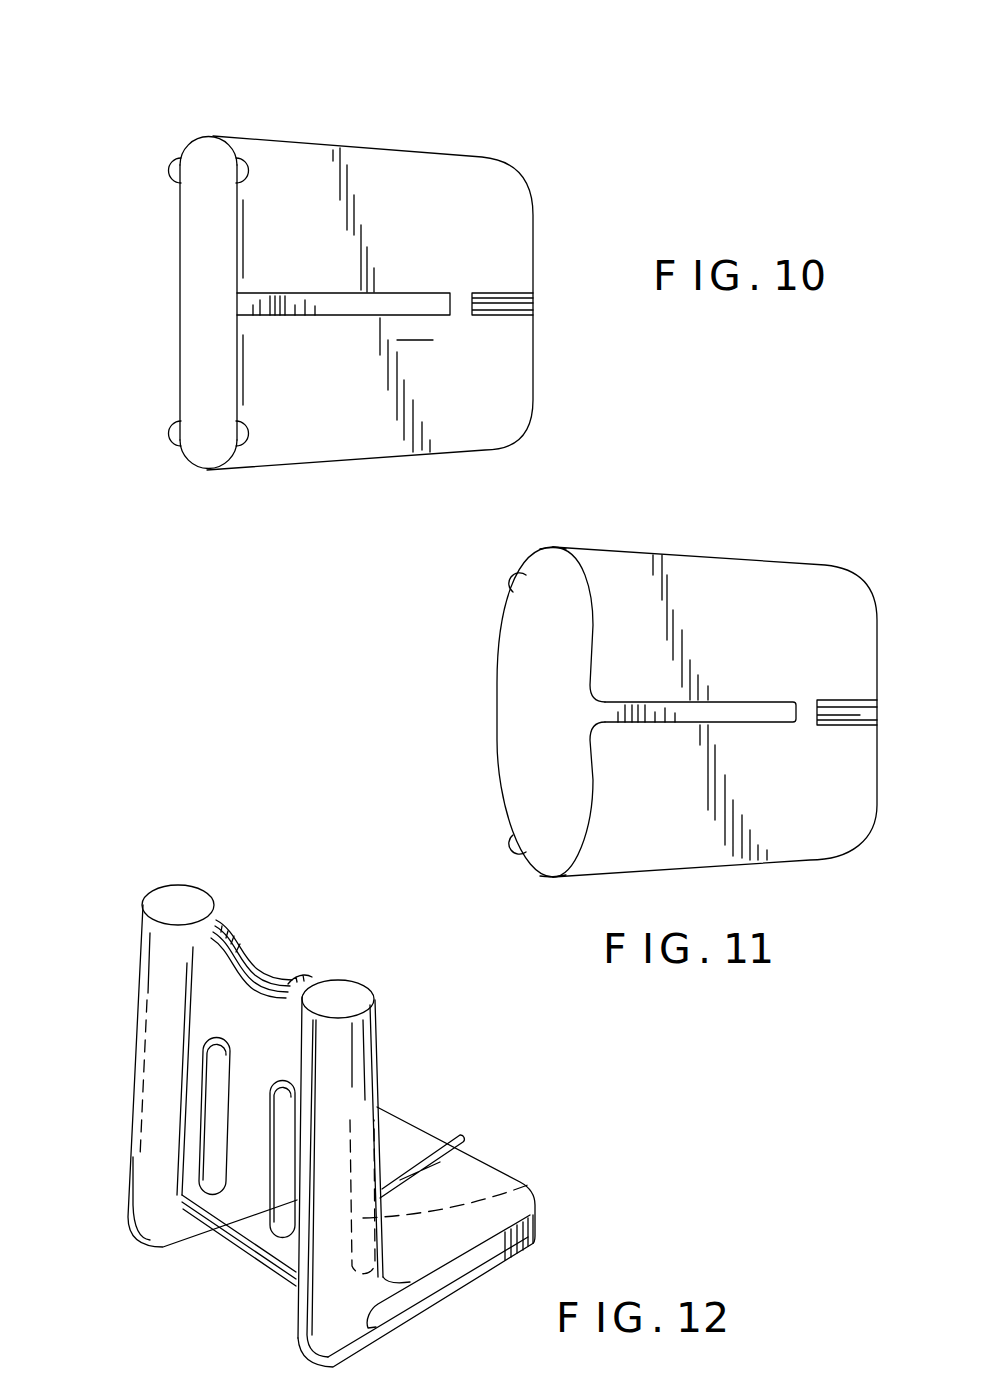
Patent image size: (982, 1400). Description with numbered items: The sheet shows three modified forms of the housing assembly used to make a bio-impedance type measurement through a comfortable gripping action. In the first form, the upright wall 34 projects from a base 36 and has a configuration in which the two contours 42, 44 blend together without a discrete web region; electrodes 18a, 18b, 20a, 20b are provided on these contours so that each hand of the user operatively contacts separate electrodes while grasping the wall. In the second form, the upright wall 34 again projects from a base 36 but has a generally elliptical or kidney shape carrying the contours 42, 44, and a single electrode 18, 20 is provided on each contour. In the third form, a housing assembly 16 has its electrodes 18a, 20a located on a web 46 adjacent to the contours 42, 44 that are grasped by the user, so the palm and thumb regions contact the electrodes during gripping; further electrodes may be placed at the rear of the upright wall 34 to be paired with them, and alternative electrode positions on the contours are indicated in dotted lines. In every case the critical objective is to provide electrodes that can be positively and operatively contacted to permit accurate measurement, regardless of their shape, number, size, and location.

In FIG. 10, the upright wall 34 is at (178, 305).
In FIG. 11, the upright wall 34 is at (497, 757).
In FIG. 12, the upright wall 34 is at (235, 1013).
In FIG. 10, the contour 42 is at (213, 136).
In FIG. 11, the contour 42 is at (553, 547).
In FIG. 12, the contour 42 is at (150, 963).
In FIG. 10, the contour 44 is at (210, 471).
In FIG. 11, the contour 44 is at (553, 877).
In FIG. 12, the contour 44 is at (340, 1055).
In FIG. 10, the electrode 18a is at (168, 172).
In FIG. 12, the electrode 18a is at (207, 1160).
In FIG. 10, the electrode 18b is at (250, 172).
In FIG. 12, the electrode 18b is at (533, 1190).
In FIG. 10, the electrode 20a is at (168, 433).
In FIG. 12, the electrode 20a is at (285, 1167).
In FIG. 10, the electrode 20b is at (250, 433).
In FIG. 10, the base 36 is at (452, 290).
In FIG. 11, the base 36 is at (787, 697).
In FIG. 11, the electrode 18 is at (512, 583).
In FIG. 11, the electrode 20 is at (512, 843).
In FIG. 12, the housing assembly 16 is at (398, 1076).
In FIG. 12, the web 46 is at (255, 1063).